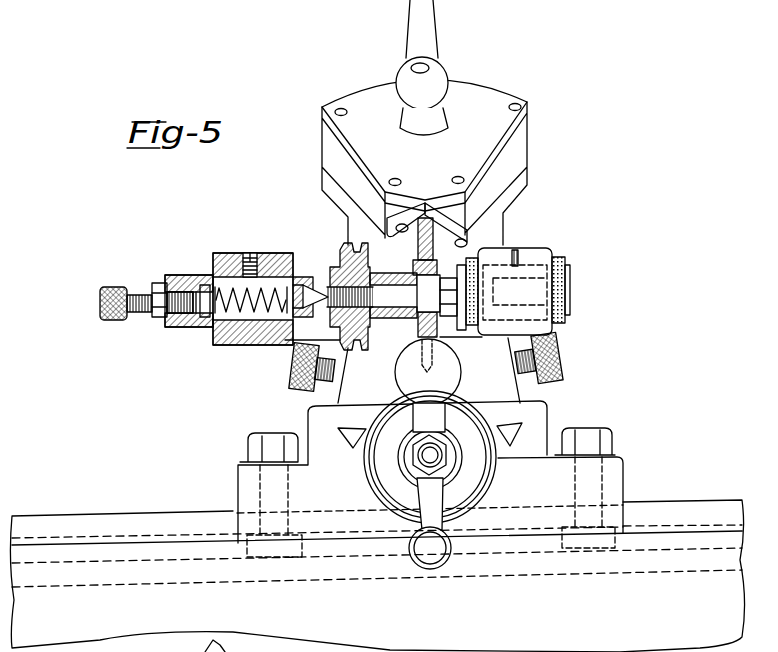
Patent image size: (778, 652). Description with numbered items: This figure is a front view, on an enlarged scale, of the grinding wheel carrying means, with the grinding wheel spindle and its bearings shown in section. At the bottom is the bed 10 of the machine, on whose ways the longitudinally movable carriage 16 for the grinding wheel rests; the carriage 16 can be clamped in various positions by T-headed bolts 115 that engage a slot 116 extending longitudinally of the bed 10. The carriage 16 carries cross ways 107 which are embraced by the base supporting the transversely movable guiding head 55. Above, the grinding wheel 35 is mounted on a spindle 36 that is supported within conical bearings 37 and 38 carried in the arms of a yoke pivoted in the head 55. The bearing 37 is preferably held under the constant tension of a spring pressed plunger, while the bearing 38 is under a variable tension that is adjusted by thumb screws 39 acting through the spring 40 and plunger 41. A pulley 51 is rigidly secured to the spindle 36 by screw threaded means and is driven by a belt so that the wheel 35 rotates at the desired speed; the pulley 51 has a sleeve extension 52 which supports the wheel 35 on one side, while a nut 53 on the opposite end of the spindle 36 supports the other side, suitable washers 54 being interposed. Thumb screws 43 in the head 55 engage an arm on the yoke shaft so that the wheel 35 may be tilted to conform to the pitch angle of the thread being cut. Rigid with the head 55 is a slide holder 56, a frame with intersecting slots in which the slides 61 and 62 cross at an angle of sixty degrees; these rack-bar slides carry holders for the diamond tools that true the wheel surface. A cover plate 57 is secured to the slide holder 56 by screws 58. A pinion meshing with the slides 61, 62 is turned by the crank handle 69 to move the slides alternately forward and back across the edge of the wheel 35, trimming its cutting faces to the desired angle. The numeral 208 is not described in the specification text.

The bed 10 is at (377, 576).
The carriage 16 is at (430, 472).
The grinding wheel 35 is at (464, 236).
The spindle 36 is at (405, 292).
The conical bearing 37 is at (524, 291).
The conical bearing 38 is at (213, 258).
The thumb screws 39 is at (106, 322).
The spring 40 is at (208, 327).
The plunger 41 is at (236, 334).
The thumb screws 43 is at (294, 374).
The pulley 51 is at (333, 242).
The sleeve extension 52 is at (393, 322).
The nut 53 is at (459, 300).
The washers 54 is at (414, 333).
The guiding head 55 is at (490, 240).
The slide holder 56 is at (505, 163).
The cover plate 57 is at (424, 145).
The screws 58 is at (522, 107).
The slide 61 is at (446, 225).
The slide 62 is at (406, 220).
The crank handle 69 is at (425, 50).
The cross ways 107 is at (515, 430).
The T-headed bolts 115 is at (603, 430).
The slot 116 is at (640, 524).
The clamp jaw 208 is at (340, 431).